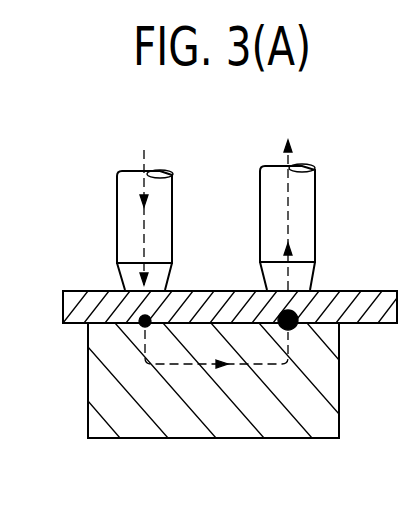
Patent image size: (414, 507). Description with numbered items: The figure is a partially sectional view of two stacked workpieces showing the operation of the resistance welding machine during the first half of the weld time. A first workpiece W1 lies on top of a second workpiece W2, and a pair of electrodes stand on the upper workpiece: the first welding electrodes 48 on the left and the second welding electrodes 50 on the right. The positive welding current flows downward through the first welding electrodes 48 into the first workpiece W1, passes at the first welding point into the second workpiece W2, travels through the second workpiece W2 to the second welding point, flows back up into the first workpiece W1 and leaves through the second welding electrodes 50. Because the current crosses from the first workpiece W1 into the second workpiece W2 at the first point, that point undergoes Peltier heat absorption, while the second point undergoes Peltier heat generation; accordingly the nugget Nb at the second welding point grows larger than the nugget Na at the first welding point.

The first welding electrodes 48 is at (118, 225).
The second welding electrodes 50 is at (315, 212).
The first workpiece W1 is at (355, 290).
The second workpiece W2 is at (227, 427).
The nugget at the first welding point Na is at (143, 326).
The nugget at the second welding point Nb is at (294, 327).